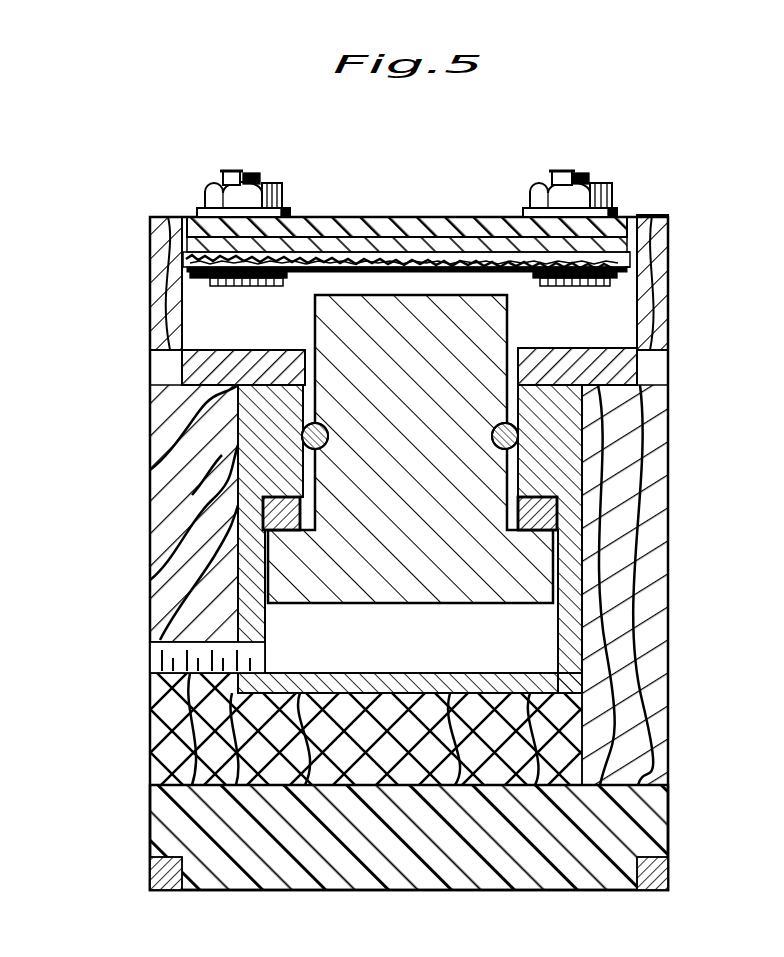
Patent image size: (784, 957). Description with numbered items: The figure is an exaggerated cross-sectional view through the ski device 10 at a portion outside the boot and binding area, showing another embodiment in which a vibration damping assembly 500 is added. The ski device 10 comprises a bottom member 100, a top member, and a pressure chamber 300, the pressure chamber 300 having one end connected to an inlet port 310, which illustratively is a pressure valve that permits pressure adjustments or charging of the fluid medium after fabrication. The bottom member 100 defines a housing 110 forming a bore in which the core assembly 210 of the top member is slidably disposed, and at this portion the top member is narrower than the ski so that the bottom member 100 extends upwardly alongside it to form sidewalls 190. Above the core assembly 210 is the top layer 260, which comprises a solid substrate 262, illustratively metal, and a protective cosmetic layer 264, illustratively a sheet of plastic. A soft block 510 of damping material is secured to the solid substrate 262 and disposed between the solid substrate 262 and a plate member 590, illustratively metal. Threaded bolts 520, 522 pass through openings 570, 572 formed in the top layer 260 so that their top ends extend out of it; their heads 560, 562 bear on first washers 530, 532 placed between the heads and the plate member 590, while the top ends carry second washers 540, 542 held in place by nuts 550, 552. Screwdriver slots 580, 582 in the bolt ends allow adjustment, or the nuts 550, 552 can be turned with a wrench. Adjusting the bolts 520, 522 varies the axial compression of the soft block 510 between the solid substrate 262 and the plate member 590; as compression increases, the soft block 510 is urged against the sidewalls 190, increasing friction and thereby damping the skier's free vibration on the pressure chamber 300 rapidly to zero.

The ski device 10 is at (545, 90).
The bottom member 100 is at (686, 539).
The housing 110 is at (483, 520).
The sidewalls 190 is at (660, 300).
The core assembly 210 is at (300, 470).
The top layer 260 is at (407, 198).
The solid substrate 262 is at (415, 237).
The protective cosmetic layer 264 is at (400, 218).
The pressure chamber 300 is at (411, 656).
The inlet port 310 is at (150, 650).
The vibration damping assembly 500 is at (620, 223).
The soft block 510 is at (632, 258).
The threaded bolt 520 is at (557, 182).
The threaded bolt 522 is at (227, 172).
The first washer 530 is at (613, 278).
The first washer 532 is at (205, 278).
The second washer 540 is at (617, 210).
The second washer 542 is at (200, 210).
The nut 550 is at (600, 183).
The nut 552 is at (280, 188).
The bolt head 560 is at (567, 286).
The bolt head 562 is at (253, 286).
The opening 570 is at (633, 225).
The opening 572 is at (187, 218).
The screwdriver slot 580 is at (567, 170).
The screwdriver slot 582 is at (240, 170).
The plate member 590 is at (507, 272).